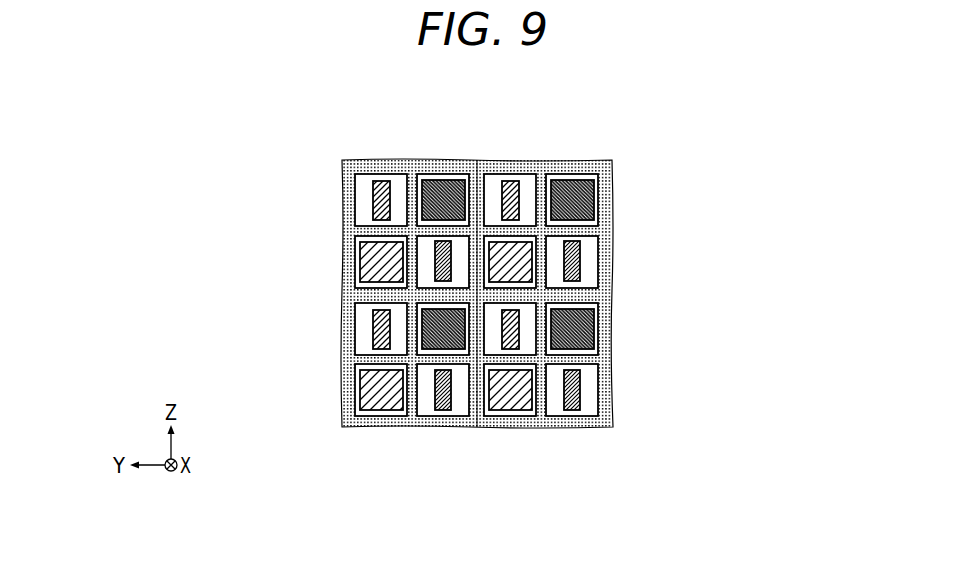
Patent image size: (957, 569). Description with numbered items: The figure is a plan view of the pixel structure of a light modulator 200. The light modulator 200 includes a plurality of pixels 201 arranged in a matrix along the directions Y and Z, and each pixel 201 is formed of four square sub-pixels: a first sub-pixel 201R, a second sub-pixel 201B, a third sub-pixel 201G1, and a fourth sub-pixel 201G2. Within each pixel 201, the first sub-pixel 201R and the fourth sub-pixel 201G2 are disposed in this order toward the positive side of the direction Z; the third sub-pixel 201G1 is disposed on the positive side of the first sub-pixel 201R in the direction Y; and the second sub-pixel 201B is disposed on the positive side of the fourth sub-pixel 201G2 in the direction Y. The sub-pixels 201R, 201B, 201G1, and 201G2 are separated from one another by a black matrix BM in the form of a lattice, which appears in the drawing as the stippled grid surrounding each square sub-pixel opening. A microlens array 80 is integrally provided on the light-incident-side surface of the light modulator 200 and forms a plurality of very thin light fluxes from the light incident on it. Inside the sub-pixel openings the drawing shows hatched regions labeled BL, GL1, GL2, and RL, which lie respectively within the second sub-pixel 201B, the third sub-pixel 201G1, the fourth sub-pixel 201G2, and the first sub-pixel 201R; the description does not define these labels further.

The light modulator 200 is at (670, 160).
The microlens array 80 is at (614, 278).
The black matrix BM is at (548, 165).
The pixel 201 is at (231, 162).
The second sub-pixel 201B is at (380, 229).
The third sub-pixel 201G1 is at (382, 323).
The fourth sub-pixel 201G2 is at (414, 229).
The first sub-pixel 201R is at (409, 325).
The element BL is at (385, 184).
The element GL1 is at (375, 280).
The element GL2 is at (444, 186).
The element RL is at (443, 275).